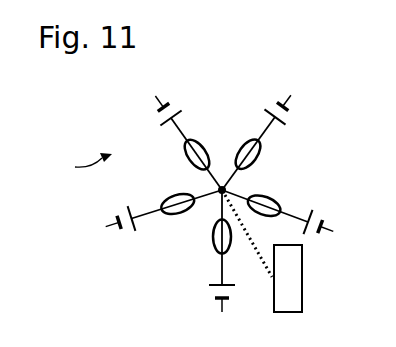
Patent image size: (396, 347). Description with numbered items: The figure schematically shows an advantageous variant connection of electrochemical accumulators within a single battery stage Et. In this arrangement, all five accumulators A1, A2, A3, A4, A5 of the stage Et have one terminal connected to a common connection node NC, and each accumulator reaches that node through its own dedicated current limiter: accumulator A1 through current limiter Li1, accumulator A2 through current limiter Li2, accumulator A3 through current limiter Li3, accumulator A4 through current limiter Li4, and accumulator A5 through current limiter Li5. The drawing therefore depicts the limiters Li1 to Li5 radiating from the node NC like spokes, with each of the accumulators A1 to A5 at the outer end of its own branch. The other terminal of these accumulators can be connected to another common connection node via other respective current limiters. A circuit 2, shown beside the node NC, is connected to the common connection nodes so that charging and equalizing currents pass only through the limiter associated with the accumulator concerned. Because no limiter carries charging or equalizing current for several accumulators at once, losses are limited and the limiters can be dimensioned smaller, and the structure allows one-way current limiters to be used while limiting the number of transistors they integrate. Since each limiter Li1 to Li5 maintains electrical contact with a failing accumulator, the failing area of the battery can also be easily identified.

The common connection node NC is at (227, 188).
The current limiter Li1 is at (213, 237).
The current limiter Li2 is at (176, 196).
The current limiter Li3 is at (186, 162).
The current limiter Li4 is at (242, 149).
The current limiter Li5 is at (268, 197).
The accumulator A1 is at (209, 284).
The accumulator A2 is at (133, 234).
The accumulator A3 is at (157, 127).
The accumulator A4 is at (265, 110).
The accumulator A5 is at (312, 210).
The circuit 2 is at (302, 278).
The stage Et is at (80, 166).